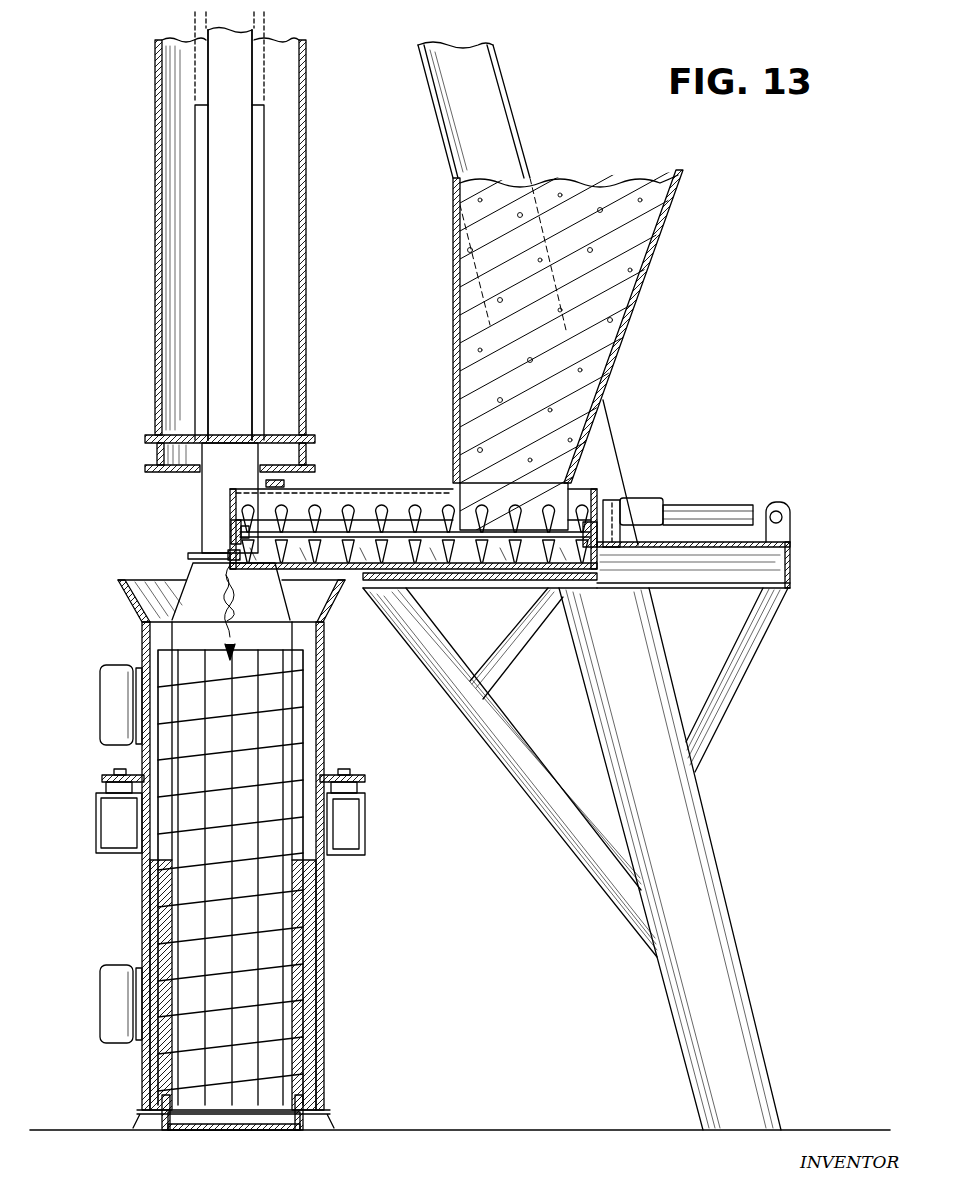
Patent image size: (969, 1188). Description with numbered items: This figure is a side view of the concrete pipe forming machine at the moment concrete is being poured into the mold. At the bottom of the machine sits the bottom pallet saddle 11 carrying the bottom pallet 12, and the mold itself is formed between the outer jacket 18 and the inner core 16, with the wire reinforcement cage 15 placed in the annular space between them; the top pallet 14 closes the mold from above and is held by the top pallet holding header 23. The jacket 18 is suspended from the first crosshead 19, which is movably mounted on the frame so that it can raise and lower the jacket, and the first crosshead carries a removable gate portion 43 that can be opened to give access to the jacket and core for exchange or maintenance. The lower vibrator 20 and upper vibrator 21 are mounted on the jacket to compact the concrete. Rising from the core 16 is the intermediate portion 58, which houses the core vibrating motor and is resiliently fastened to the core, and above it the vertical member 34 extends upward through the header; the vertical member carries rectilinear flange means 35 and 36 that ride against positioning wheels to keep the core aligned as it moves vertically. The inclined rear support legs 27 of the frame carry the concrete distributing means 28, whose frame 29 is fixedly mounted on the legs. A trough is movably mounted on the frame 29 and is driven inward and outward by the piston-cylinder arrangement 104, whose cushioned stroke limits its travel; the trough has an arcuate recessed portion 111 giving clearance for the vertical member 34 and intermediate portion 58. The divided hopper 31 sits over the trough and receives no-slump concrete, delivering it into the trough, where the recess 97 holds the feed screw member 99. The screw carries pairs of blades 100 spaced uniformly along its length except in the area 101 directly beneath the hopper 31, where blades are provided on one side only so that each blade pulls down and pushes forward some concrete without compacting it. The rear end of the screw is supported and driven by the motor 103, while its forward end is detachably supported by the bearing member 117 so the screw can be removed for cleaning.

The bottom pallet saddle 11 is at (205, 1118).
The bottom pallet 12 is at (156, 1134).
The top pallet 14 is at (152, 456).
The wire reinforcement cage 15 is at (303, 765).
The core 16 is at (190, 593).
The jacket 18 is at (322, 684).
The first crosshead 19 is at (365, 820).
The lower vibrator 20 is at (110, 986).
The upper vibrator 21 is at (120, 663).
The top pallet holding header 23 is at (157, 290).
The inclined rear support legs 27 is at (696, 884).
The concrete distributing means 28 is at (393, 487).
The frame 29 is at (792, 573).
The divided hopper 31 is at (652, 258).
The vertical member 34 is at (245, 199).
The rectilinear flange means 35 is at (258, 162).
The rectilinear flange means 36 is at (200, 232).
The removable gate portion 43 is at (98, 822).
The intermediate portion 58 is at (212, 493).
The recess 97 is at (445, 580).
The feed screw member 99 is at (330, 534).
The blades 100 is at (418, 510).
The area 101 is at (535, 519).
The motor 103 is at (648, 500).
The piston-cylinder arrangement 104 is at (720, 512).
The arcuate recessed portion 111 is at (268, 481).
The bearing member 117 is at (232, 527).